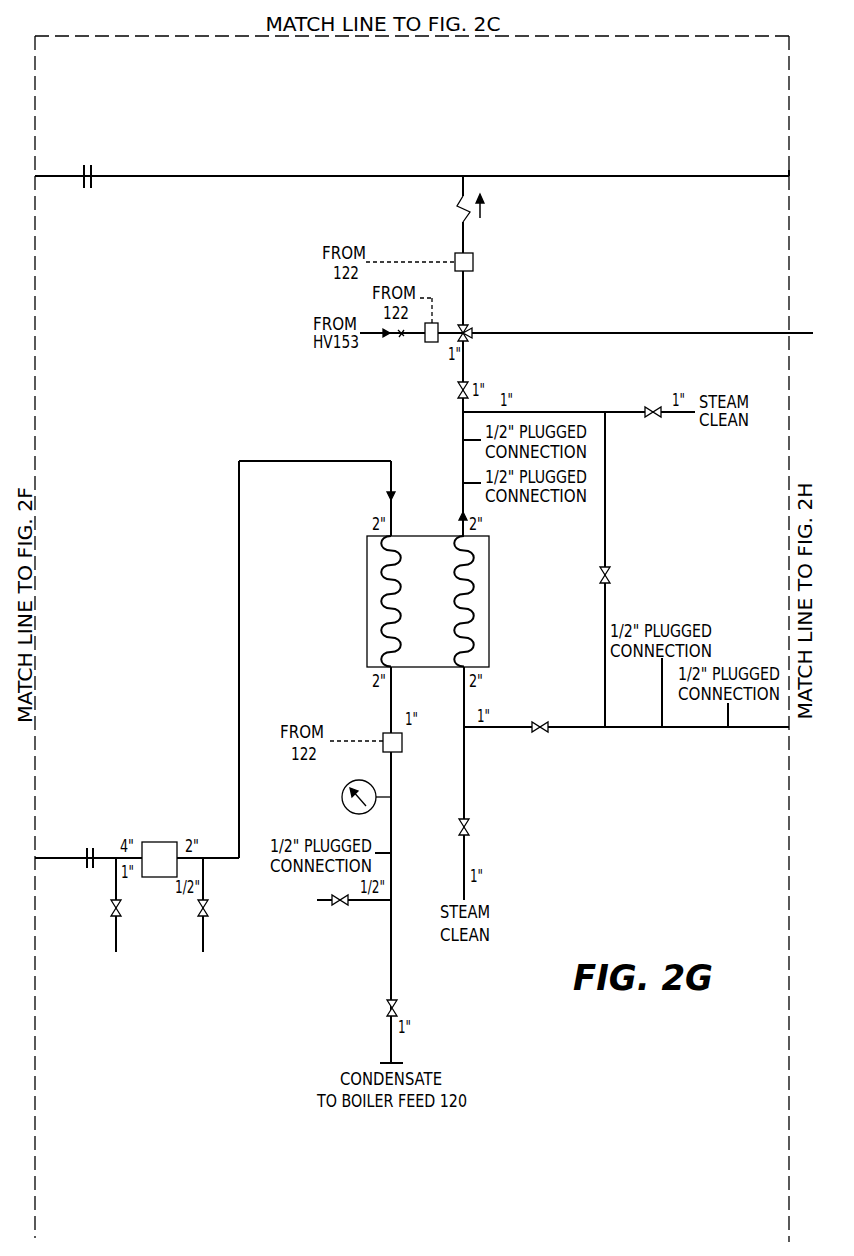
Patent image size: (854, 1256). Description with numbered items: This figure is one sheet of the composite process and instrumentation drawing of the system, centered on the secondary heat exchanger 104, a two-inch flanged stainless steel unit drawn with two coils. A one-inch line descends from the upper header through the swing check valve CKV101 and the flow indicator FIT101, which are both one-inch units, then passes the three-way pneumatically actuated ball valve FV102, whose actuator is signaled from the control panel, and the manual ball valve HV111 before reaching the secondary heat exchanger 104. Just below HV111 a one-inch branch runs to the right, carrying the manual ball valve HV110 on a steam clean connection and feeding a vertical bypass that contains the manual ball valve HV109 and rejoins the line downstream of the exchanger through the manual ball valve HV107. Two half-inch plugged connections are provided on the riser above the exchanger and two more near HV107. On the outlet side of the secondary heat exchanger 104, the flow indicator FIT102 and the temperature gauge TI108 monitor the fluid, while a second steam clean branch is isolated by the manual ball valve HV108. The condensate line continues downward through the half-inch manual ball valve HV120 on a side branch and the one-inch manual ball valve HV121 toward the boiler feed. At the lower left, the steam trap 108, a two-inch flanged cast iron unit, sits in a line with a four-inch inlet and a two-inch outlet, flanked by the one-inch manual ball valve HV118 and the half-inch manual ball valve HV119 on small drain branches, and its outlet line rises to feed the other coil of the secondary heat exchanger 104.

The swing check valve CKV101 is at (443, 210).
The flow indicator FIT101 is at (488, 250).
The three-way ball valve with pneumatic actuator FV102 is at (470, 313).
The manual ball valve HV111 is at (436, 390).
The manual ball valve HV110 is at (658, 438).
The manual ball valve HV109 is at (577, 575).
The secondary heat exchanger 104 is at (428, 601).
The manual ball valve HV107 is at (537, 700).
The flow indicator FIT102 is at (368, 719).
The temperature gauge TI108 is at (340, 797).
The manual ball valve HV108 is at (491, 844).
The manual ball valve HV120 is at (338, 928).
The manual ball valve HV121 is at (365, 1008).
The steam trap 108 is at (159, 835).
The manual ball valve HV118 is at (88, 925).
The manual ball valve HV119 is at (230, 925).